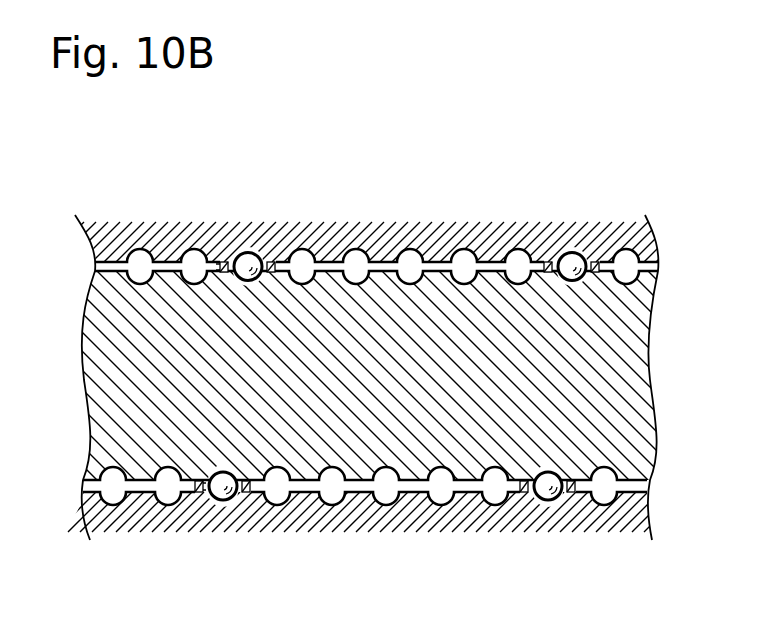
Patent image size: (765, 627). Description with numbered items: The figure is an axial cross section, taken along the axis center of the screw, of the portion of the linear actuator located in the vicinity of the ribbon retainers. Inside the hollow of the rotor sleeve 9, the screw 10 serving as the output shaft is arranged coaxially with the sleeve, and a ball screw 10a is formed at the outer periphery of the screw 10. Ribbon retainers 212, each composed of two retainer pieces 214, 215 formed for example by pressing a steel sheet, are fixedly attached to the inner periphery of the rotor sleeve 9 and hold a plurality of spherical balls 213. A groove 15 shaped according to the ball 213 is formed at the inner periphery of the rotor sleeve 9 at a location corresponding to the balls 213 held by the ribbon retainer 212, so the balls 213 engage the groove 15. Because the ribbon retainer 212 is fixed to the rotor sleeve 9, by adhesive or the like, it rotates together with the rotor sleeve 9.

The rotor sleeve 9 is at (395, 243).
The screw 10 is at (325, 320).
The ball screw 10a is at (353, 283).
The groove 15 is at (418, 255).
The ribbon retainer 212 is at (226, 262).
The ball 213 is at (247, 262).
The retainer piece 214 is at (269, 262).
The retainer piece 215 is at (217, 266).